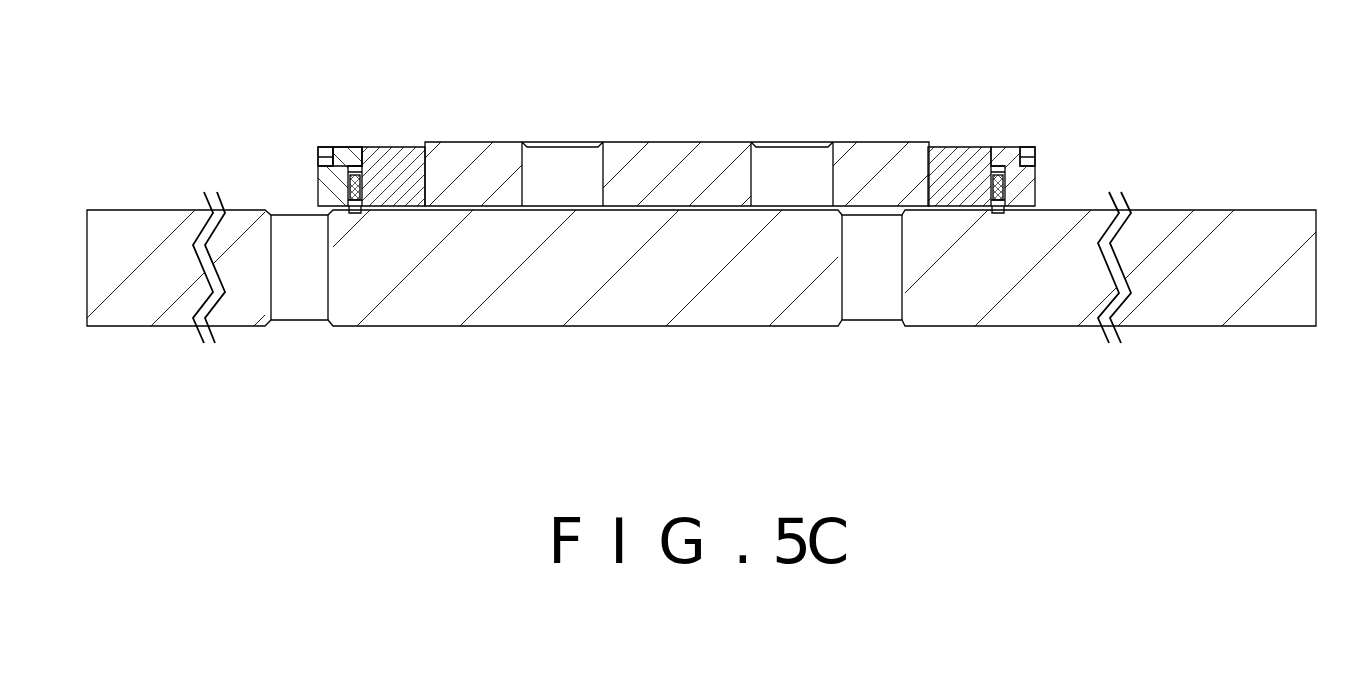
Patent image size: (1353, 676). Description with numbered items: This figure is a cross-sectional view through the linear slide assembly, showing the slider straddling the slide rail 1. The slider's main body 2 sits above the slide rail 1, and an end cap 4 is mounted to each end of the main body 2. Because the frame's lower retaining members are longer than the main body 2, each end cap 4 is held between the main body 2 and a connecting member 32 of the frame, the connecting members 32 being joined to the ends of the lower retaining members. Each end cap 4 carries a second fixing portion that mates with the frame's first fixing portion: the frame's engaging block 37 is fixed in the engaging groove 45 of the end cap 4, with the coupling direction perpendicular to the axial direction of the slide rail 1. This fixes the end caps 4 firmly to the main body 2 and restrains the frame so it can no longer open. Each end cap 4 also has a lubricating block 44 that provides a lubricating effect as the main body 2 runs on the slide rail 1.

The slide rail 1 is at (629, 303).
The main body 2 is at (683, 177).
The end cap 4 is at (393, 173).
The connecting member 32 is at (333, 183).
The engaging block 37 is at (348, 157).
The lubricating block 44 is at (359, 188).
The engaging groove 45 is at (318, 157).